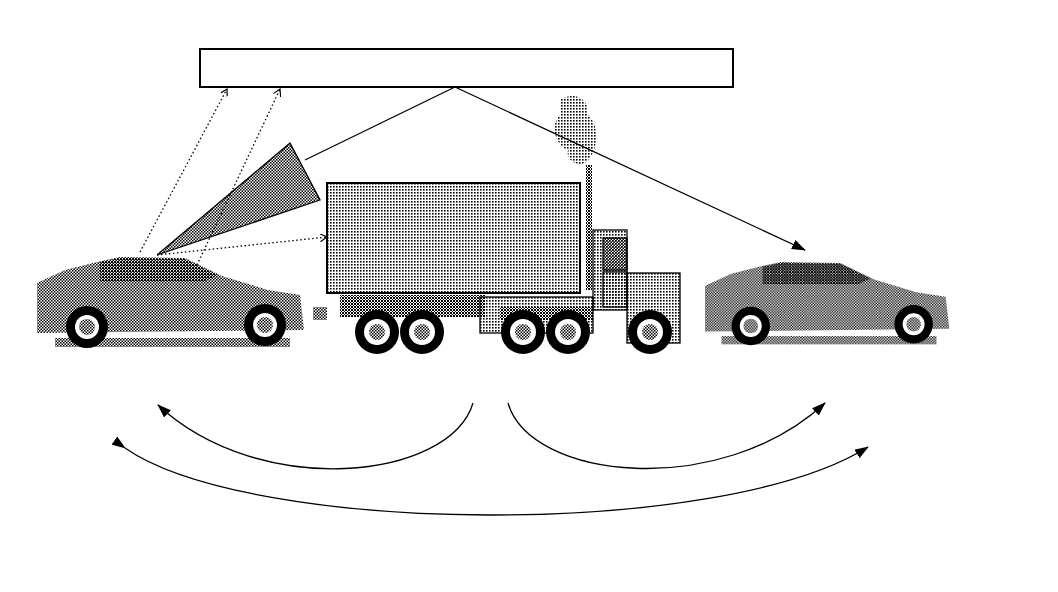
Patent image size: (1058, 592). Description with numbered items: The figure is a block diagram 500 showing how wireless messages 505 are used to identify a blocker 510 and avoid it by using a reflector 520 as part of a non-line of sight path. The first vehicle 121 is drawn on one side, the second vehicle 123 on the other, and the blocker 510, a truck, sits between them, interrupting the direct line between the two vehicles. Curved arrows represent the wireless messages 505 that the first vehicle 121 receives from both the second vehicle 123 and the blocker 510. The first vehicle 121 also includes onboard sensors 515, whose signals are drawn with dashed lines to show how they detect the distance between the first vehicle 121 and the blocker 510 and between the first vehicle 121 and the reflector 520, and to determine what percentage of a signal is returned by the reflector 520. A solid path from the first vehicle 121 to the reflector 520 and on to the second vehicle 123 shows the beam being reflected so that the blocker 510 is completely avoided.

The block diagram 500 is at (87, 87).
The onboard sensors 515 is at (426, 176).
The reflector 520 is at (535, 80).
The first vehicle 121 is at (170, 327).
The blocker 510 is at (496, 246).
The second vehicle 123 is at (827, 330).
The wireless messages 505 is at (496, 459).